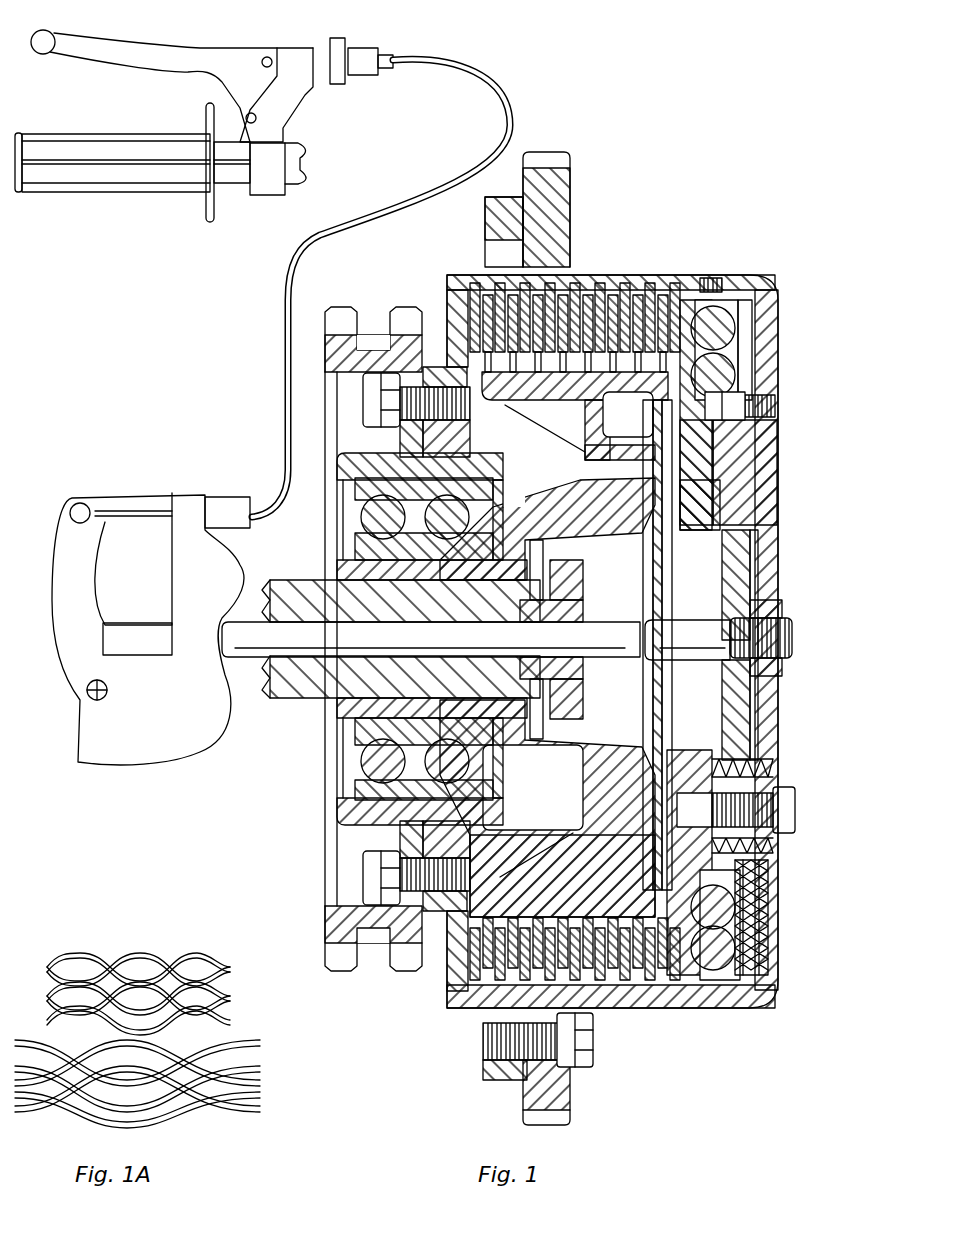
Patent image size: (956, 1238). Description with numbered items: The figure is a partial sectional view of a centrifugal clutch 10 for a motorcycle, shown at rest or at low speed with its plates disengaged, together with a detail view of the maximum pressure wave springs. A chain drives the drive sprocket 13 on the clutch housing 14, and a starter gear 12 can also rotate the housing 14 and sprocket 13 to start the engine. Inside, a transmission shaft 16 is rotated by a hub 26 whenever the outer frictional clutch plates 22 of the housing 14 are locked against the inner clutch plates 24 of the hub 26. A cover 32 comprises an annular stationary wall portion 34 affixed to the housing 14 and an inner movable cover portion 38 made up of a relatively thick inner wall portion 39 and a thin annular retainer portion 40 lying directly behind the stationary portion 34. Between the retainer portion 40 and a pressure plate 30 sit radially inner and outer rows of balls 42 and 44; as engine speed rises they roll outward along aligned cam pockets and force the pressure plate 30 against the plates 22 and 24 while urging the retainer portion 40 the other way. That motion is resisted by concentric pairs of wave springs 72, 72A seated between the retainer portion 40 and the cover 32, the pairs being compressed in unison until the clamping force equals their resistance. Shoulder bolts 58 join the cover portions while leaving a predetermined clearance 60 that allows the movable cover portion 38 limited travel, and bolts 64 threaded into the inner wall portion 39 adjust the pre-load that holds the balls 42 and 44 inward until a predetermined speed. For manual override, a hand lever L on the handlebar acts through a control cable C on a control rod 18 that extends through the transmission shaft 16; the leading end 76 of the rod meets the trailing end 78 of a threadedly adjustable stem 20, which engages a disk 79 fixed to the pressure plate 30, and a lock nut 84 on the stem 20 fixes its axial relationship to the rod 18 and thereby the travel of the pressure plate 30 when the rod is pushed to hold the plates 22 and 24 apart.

In FIG. 1, the hand lever L is at (235, 50).
In FIG. 1, the control cable C is at (268, 300).
In FIG. 1, the clutch 10 is at (302, 880).
In FIG. 1, the starter gear 12 is at (567, 1085).
In FIG. 1, the drive sprocket 13 is at (325, 945).
In FIG. 1, the clutch housing 14 is at (452, 995).
In FIG. 1, the transmission shaft 16 is at (292, 700).
In FIG. 1, the control rod 18 is at (155, 625).
In FIG. 1, the threadedly adjustable stem 20 is at (790, 636).
In FIG. 1, the outer frictional clutch plates 22 is at (648, 292).
In FIG. 1, the inner clutch plates 24 is at (636, 300).
In FIG. 1, the hub 26 is at (615, 900).
In FIG. 1, the pressure plate 30 is at (690, 826).
In FIG. 1, the cover 32 is at (782, 320).
In FIG. 1, the annular stationary wall portion 34 is at (760, 305).
In FIG. 1, the inner movable cover portion 38 is at (782, 458).
In FIG. 1, the inner wall portion 39 is at (748, 466).
In FIG. 1, the annular retainer portion 40 is at (727, 965).
In FIG. 1, the inner row balls 42 is at (717, 360).
In FIG. 1, the outer row balls 44 is at (720, 330).
In FIG. 1, the shoulder bolts 58 is at (770, 402).
In FIG. 1, the clearance 60 is at (746, 370).
In FIG. 1, the bolts 64 is at (797, 808).
In FIG. 1, the maximum pressure spring 72 is at (768, 950).
In FIG. 1A, the maximum pressure spring 72 is at (262, 1115).
In FIG. 1A, the maximum pressure spring 72A is at (232, 998).
In FIG. 1, the leading end of push rod 76 is at (620, 625).
In FIG. 1, the trailing end of stem 78 is at (700, 625).
In FIG. 1, the disk 79 is at (735, 700).
In FIG. 1, the lock nut 84 is at (785, 612).